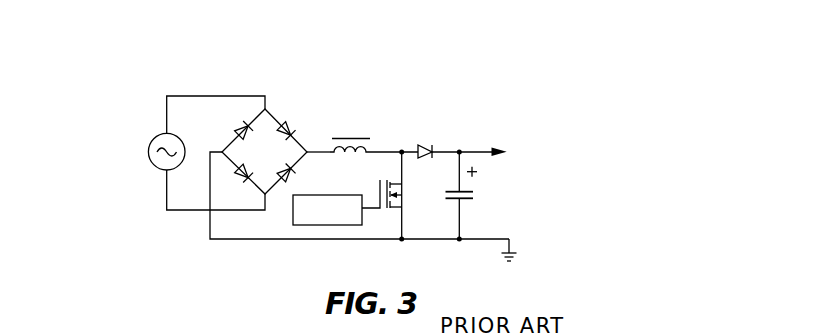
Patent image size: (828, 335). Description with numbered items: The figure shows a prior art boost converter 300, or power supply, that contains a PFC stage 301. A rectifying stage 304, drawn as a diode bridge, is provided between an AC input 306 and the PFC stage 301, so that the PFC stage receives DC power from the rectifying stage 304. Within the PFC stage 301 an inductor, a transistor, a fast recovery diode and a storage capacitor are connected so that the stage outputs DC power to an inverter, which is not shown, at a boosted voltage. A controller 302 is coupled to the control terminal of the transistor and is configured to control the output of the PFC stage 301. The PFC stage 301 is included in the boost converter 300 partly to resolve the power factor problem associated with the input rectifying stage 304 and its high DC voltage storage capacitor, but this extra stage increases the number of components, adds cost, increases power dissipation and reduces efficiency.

The boost converter 300 is at (552, 58).
The PFC stage 301 is at (442, 83).
The controller 302 is at (315, 225).
The rectifying stage 304 is at (283, 100).
The AC input 306 is at (148, 155).